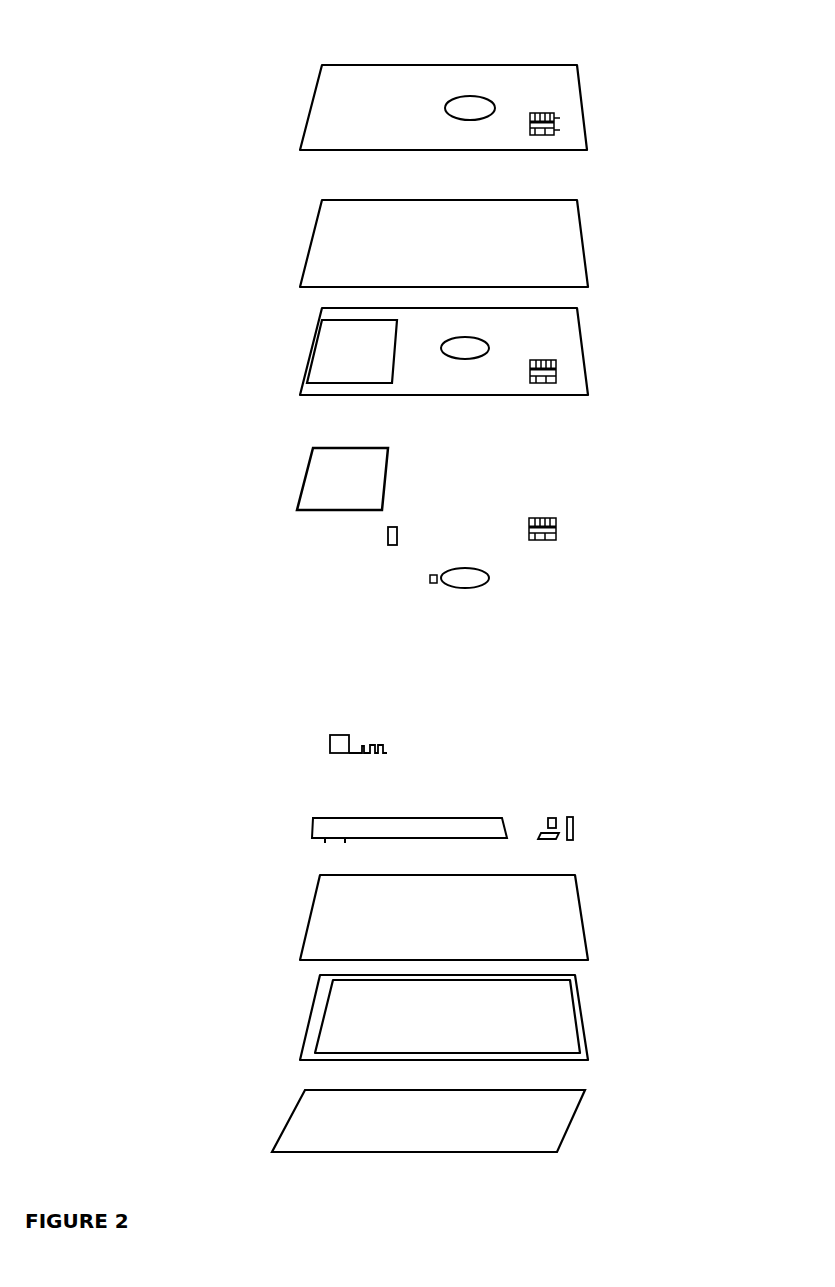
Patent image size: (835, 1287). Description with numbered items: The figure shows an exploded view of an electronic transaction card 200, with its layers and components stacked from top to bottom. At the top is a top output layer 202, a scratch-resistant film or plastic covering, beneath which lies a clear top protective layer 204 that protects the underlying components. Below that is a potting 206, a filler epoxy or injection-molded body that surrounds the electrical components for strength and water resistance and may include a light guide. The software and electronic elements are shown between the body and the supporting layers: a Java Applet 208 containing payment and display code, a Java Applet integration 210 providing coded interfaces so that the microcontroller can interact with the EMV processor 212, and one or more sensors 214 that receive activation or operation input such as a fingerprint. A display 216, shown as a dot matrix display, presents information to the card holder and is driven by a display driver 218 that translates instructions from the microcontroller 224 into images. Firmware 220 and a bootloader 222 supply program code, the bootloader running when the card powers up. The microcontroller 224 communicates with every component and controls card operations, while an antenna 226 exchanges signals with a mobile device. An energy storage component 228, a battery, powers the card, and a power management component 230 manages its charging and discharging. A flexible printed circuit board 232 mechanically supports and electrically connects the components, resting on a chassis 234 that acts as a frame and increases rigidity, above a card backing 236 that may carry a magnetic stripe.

The electronic transaction card 200 is at (138, 63).
The top output layer 202 is at (587, 102).
The top protective layer 204 is at (650, 243).
The potting 206 is at (612, 346).
The Java Applet 208 is at (593, 433).
The Java Applet integration 210 is at (593, 482).
The EMV processor 212 is at (558, 527).
The sensors 214 is at (497, 576).
The display 216 is at (305, 465).
The display driver 218 is at (387, 537).
The firmware 220 is at (312, 612).
The bootloader 222 is at (312, 688).
The microcontroller 224 is at (328, 743).
The antenna 226 is at (370, 756).
The energy storage component 228 is at (510, 825).
The power management component 230 is at (575, 822).
The flexible printed circuit board 232 is at (297, 942).
The chassis 234 is at (593, 1011).
The card backing 236 is at (587, 1102).